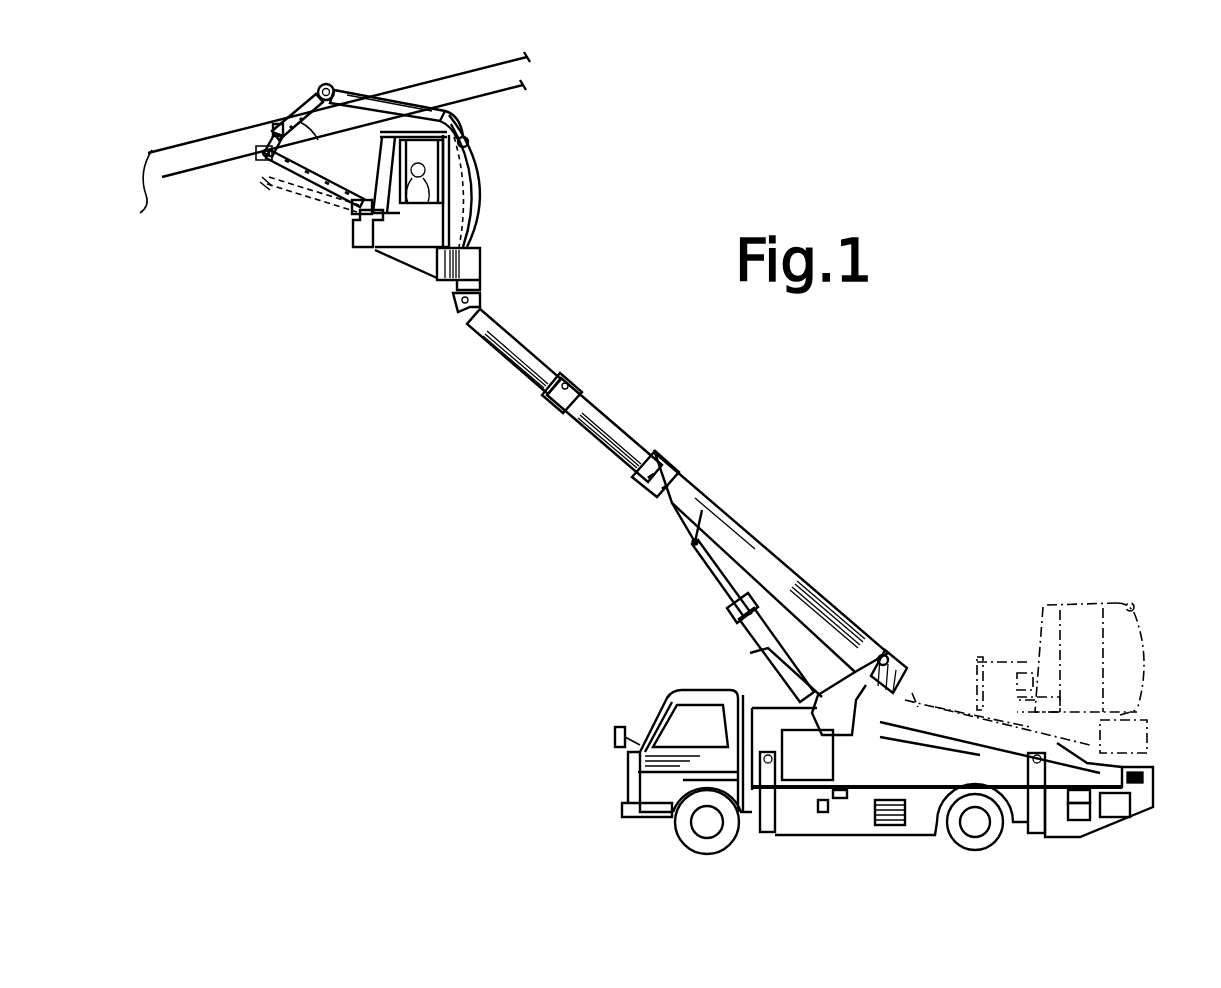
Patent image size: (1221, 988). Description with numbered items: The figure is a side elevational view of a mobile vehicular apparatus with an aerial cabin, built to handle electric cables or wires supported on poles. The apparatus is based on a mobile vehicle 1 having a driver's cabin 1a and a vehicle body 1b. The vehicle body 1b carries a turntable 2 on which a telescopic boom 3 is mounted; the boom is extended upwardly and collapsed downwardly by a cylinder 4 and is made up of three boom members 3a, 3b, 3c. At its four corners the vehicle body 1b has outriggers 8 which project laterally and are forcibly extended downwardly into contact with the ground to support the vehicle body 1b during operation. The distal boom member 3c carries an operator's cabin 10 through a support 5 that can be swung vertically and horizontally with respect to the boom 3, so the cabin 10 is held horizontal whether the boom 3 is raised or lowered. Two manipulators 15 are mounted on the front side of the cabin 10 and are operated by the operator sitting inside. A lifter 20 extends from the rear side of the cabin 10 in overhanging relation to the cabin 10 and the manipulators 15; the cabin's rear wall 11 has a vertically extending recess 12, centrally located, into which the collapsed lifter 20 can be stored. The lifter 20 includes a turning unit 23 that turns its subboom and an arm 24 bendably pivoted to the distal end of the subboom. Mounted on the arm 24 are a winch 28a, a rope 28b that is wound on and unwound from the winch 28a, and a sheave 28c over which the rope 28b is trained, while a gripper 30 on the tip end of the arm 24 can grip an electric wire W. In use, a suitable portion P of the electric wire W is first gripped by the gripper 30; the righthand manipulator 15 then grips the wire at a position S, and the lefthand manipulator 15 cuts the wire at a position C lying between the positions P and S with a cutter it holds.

The mobile vehicle 1 is at (884, 707).
The driver's cabin 1a is at (685, 688).
The vehicle body 1b is at (853, 828).
The turntable 2 is at (868, 655).
The telescopic boom 3 is at (788, 541).
The boom member 3a is at (672, 500).
The boom member 3b is at (597, 433).
The boom member 3c is at (505, 345).
The cylinder 4 is at (748, 615).
The support 5 is at (422, 260).
The outriggers 8 is at (776, 810).
The operator's cabin 10 is at (402, 250).
The rear wall 11 is at (475, 210).
The recess 12 is at (462, 185).
The manipulators 15 is at (292, 188).
The lifter 20 is at (350, 90).
The turning unit 23 is at (468, 132).
The arm 24 is at (320, 114).
The winch 28a is at (321, 85).
The rope 28b is at (302, 97).
The sheave 28c is at (262, 130).
The gripper 30 is at (256, 150).
The cutting position C is at (264, 165).
The gripped portion of electric wire P is at (259, 158).
The gripping position S is at (308, 127).
The electric wire W is at (330, 149).